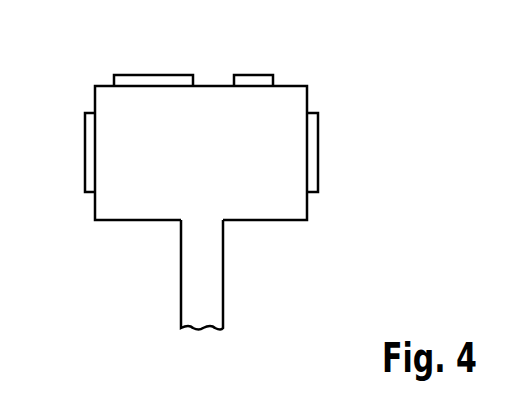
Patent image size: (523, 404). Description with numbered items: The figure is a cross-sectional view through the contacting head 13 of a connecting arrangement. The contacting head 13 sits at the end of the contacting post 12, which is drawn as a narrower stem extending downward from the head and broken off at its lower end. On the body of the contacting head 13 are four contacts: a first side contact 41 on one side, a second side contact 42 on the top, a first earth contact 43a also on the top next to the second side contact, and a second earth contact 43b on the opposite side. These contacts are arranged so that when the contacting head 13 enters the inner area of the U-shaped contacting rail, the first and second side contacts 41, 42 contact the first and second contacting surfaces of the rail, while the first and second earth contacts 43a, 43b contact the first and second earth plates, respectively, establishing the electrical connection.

The contacting post 12 is at (208, 273).
The contacting head 13 is at (292, 165).
The first side contact 41 is at (92, 153).
The second side contact 42 is at (153, 82).
The first earth contact 43a is at (253, 82).
The second earth contact 43b is at (313, 133).